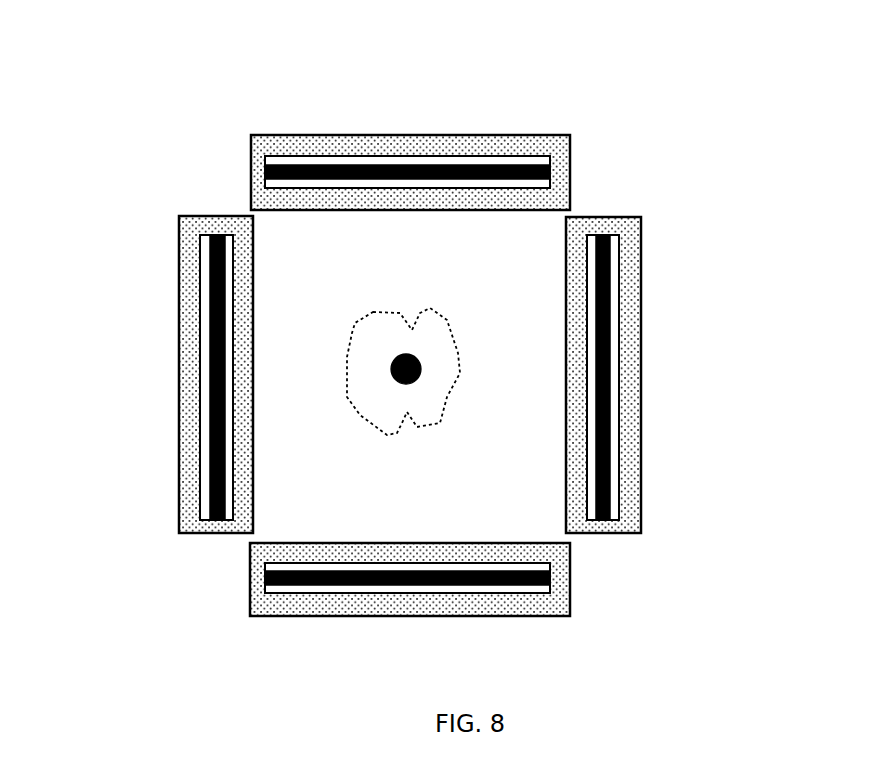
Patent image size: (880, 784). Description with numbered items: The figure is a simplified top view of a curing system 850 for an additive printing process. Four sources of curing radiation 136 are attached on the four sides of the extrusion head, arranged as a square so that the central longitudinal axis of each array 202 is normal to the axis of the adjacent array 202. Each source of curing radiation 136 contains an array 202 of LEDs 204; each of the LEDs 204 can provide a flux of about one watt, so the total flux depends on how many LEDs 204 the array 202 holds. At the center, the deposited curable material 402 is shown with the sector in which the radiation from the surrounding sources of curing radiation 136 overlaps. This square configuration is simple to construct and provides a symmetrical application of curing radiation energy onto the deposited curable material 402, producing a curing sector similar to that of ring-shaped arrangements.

The curing system 850 is at (413, 360).
The source of curing radiation 136 is at (534, 135).
The array 202 is at (405, 364).
The LEDs 204 is at (390, 583).
The deposited curable material 402 is at (393, 362).